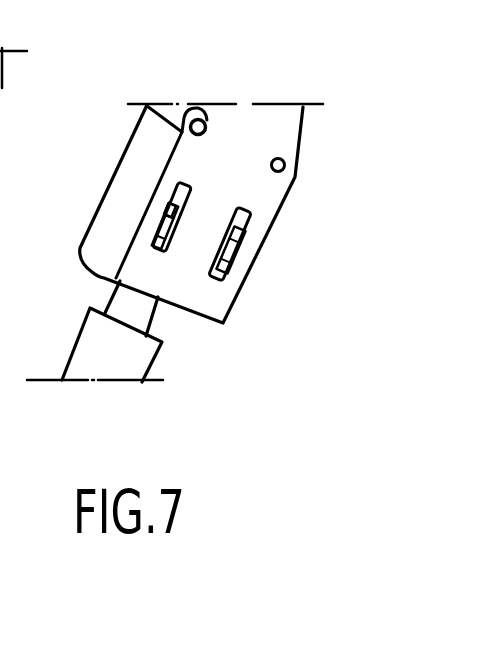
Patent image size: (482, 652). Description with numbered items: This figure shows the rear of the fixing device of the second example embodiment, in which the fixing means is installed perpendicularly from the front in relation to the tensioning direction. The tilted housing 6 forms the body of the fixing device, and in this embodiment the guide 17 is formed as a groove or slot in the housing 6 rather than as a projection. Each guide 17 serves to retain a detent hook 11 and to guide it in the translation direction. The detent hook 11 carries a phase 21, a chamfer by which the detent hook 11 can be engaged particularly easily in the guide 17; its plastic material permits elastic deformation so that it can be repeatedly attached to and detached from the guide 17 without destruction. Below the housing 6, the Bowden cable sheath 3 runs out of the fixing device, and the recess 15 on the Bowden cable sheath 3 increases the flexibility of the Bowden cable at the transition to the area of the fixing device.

The housing 6 is at (248, 125).
The detent hook 11 is at (170, 200).
The guide 17 is at (158, 244).
The phase 21 is at (165, 212).
The recess 15 is at (132, 310).
The Bowden cable sheath 3 is at (122, 368).